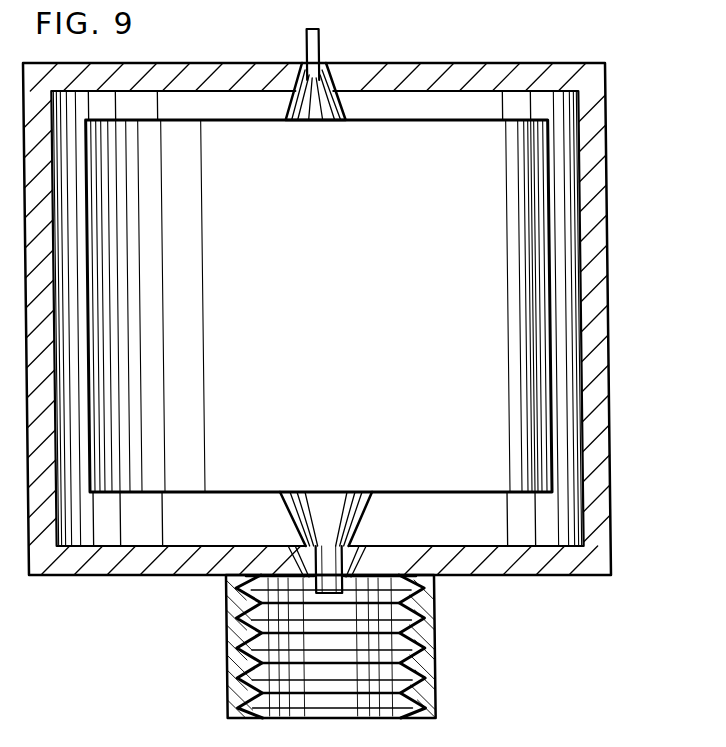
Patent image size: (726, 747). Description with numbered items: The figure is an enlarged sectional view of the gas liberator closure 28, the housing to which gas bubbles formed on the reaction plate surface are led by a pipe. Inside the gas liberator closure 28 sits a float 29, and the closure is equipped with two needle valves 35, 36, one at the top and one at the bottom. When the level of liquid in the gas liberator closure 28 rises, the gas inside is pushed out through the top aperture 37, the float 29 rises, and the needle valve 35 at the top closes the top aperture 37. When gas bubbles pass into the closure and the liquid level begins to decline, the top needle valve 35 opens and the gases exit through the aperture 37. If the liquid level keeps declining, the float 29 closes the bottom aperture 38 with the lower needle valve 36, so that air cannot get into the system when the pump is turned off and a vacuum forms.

The gas liberator closure 28 is at (598, 378).
The float 29 is at (533, 250).
The needle valve 35 is at (305, 45).
The top aperture 37 is at (333, 85).
The needle valve 36 is at (318, 522).
The bottom aperture 38 is at (372, 562).